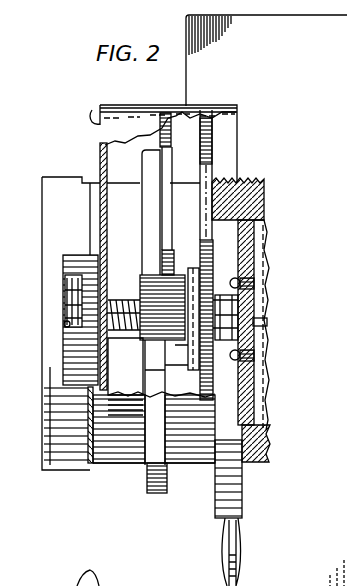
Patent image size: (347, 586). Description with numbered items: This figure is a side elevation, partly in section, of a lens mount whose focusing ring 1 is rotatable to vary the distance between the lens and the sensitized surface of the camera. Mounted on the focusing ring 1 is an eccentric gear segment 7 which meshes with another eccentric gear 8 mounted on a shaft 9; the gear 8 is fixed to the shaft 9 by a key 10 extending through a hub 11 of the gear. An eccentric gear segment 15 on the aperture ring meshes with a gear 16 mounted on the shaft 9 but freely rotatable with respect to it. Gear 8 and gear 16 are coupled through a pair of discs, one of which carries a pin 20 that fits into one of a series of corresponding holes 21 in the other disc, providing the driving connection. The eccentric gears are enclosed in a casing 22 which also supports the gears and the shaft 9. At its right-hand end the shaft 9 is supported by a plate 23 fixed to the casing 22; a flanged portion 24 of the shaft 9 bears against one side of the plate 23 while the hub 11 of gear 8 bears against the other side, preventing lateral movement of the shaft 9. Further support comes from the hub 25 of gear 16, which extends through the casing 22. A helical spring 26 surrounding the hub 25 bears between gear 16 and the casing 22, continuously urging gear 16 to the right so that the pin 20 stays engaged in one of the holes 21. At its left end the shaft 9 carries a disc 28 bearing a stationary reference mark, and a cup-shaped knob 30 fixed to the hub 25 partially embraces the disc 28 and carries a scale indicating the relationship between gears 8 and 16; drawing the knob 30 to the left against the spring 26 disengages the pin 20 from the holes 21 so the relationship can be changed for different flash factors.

The focusing ring 1 is at (214, 512).
The eccentric gear segment 7 is at (212, 140).
The eccentric gear 8 is at (254, 385).
The shaft 9 is at (64, 325).
The key 10 is at (222, 292).
The hub 11 is at (225, 340).
The eccentric gear segment 15 is at (166, 146).
The gear 16 is at (152, 274).
The pin 20 is at (195, 268).
The holes 21 is at (186, 362).
The casing 22 is at (254, 232).
The plate 23 is at (252, 298).
The flanged portion 24 is at (258, 306).
The hub 25 is at (116, 342).
The helical spring 26 is at (128, 300).
The disc 28 is at (69, 290).
The cup-shaped knob 30 is at (73, 256).